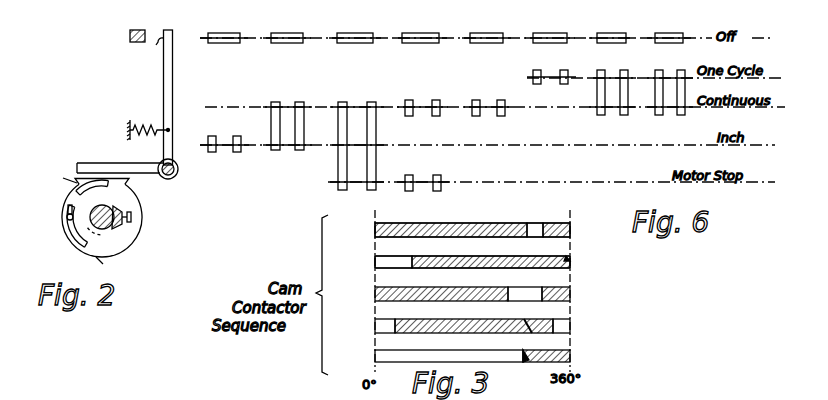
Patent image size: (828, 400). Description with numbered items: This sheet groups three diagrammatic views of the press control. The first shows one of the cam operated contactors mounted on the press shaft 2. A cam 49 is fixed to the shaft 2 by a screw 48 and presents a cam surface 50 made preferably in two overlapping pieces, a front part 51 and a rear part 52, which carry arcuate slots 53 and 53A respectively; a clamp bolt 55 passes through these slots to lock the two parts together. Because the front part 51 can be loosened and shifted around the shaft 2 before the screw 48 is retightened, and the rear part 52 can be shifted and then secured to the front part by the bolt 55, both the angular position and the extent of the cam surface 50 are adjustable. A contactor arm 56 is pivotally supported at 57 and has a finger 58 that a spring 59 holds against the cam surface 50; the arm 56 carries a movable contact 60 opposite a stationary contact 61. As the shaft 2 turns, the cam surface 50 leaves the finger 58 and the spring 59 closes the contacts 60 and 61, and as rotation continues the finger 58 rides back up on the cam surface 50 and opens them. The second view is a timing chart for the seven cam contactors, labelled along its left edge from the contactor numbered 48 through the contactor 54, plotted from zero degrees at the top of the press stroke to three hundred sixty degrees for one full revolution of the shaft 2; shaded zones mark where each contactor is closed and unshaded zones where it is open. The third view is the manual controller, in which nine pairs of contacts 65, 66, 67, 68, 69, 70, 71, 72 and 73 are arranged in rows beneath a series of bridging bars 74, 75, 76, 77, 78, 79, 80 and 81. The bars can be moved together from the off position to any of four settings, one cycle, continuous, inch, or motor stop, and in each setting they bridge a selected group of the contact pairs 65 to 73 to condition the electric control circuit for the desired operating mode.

In FIG. 2, the shaft 2 is at (112, 224).
In FIG. 2, the screw 48 is at (131, 216).
In FIG. 3, the screw 48 is at (446, 231).
In FIG. 2, the cam 49 is at (66, 240).
In FIG. 3, the cam 49 is at (472, 230).
In FIG. 2, the cam surface 50 is at (66, 198).
In FIG. 3, the cam surface 50 is at (458, 295).
In FIG. 2, the front part 51 is at (96, 252).
In FIG. 3, the front part 51 is at (446, 263).
In FIG. 2, the rear part 52 is at (118, 183).
In FIG. 3, the rear part 52 is at (472, 262).
In FIG. 2, the arcuate slot 53 is at (82, 246).
In FIG. 3, the arcuate slot 53 is at (458, 327).
In FIG. 2, the arcuate slot 53A is at (58, 175).
In FIG. 3, the cam operated contactor 54 is at (458, 357).
In FIG. 2, the clamp bolt 55 is at (67, 218).
In FIG. 2, the contactor arm 56 is at (173, 80).
In FIG. 2, the pivot 57 is at (178, 170).
In FIG. 2, the finger 58 is at (108, 162).
In FIG. 2, the spring 59 is at (148, 120).
In FIG. 2, the movable contact 60 is at (151, 50).
In FIG. 2, the stationary contact 61 is at (145, 30).
In FIG. 6, the pair of contacts 65 is at (677, 122).
In FIG. 6, the pair of contacts 66 is at (620, 122).
In FIG. 6, the pair of contacts 67 is at (497, 123).
In FIG. 6, the pair of contacts 68 is at (432, 123).
In FIG. 6, the pair of contacts 69 is at (367, 197).
In FIG. 6, the pair of contacts 70 is at (560, 91).
In FIG. 6, the pair of contacts 71 is at (296, 157).
In FIG. 6, the pair of contacts 72 is at (236, 159).
In FIG. 6, the pair of contacts 73 is at (433, 198).
In FIG. 6, the bridging bar 74 is at (669, 33).
In FIG. 6, the bridging bar 75 is at (611, 33).
In FIG. 6, the bridging bar 76 is at (550, 33).
In FIG. 6, the bridging bar 77 is at (485, 33).
In FIG. 6, the bridging bar 78 is at (418, 33).
In FIG. 6, the bridging bar 79 is at (353, 33).
In FIG. 6, the bridging bar 80 is at (285, 33).
In FIG. 6, the bridging bar 81 is at (222, 33).